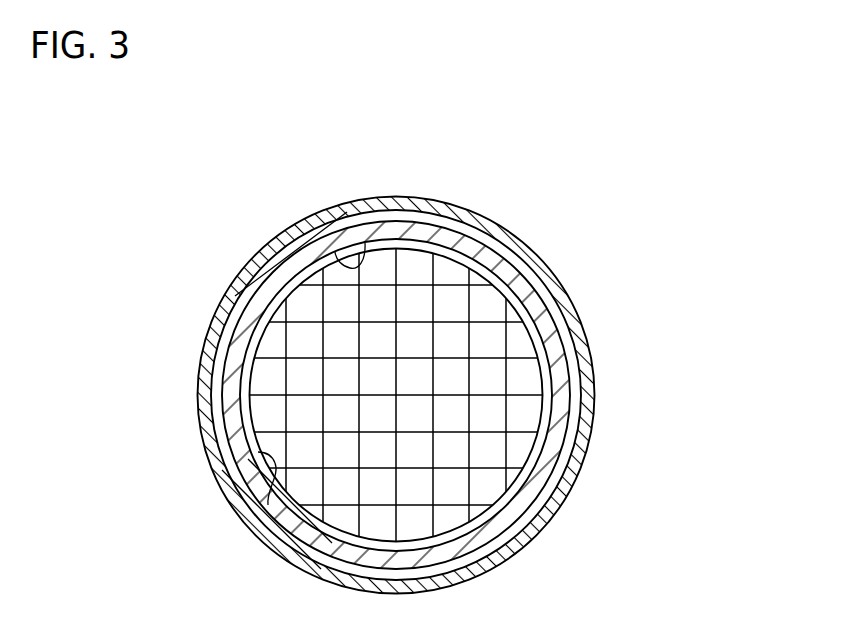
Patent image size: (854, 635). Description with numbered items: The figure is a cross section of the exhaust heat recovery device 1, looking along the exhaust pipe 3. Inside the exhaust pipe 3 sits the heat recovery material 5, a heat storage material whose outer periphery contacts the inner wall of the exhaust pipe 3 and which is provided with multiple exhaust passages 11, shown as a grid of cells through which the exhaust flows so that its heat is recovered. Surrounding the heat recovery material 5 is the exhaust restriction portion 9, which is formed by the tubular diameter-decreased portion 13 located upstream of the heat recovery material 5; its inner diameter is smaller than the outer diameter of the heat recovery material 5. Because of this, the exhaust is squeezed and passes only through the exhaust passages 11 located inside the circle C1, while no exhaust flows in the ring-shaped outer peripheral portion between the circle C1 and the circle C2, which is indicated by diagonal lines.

The exhaust heat recovery device 1 is at (438, 364).
The exhaust pipe 3 is at (433, 198).
The heat recovery material 5 is at (432, 302).
The exhaust restriction portion 9 is at (548, 320).
The exhaust passages 11 is at (492, 458).
The diameter-decreased portion 13 is at (570, 356).
The circle C1 is at (365, 243).
The circle C2 is at (312, 238).